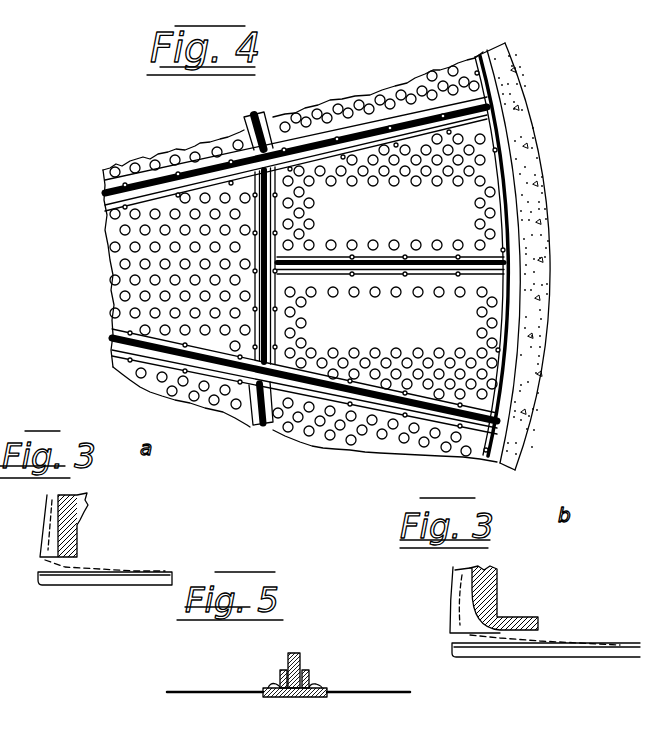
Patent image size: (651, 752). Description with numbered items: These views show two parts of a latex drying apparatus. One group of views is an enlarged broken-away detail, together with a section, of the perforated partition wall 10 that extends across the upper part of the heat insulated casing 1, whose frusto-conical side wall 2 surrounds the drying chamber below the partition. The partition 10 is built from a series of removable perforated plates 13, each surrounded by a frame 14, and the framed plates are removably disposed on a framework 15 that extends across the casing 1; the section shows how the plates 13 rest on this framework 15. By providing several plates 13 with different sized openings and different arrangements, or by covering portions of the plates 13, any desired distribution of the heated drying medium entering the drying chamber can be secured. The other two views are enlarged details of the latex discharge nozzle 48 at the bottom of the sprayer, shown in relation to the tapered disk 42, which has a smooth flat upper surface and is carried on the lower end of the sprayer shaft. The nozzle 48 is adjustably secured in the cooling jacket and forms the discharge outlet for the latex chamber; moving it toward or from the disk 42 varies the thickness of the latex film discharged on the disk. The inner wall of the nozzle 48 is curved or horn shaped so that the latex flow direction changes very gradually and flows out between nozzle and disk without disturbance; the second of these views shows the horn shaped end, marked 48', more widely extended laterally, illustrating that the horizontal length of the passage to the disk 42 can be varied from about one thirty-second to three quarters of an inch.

In FIG. 4, the heat insulated casing 1 is at (552, 333).
In FIG. 4, the frusto-conical side wall 2 is at (542, 374).
In FIG. 4, the perforated partition wall 10 is at (500, 213).
In FIG. 4, the perforated plates 13 is at (90, 205).
In FIG. 5, the perforated plates 13 is at (237, 679).
In FIG. 4, the frames 14 is at (247, 113).
In FIG. 5, the frames 14 is at (266, 684).
In FIG. 4, the framework 15 is at (307, 381).
In FIG. 5, the framework 15 is at (299, 657).
In FIG. 3A, the tapered disk 42 is at (110, 575).
In FIG. 3B, the tapered disk 42 is at (547, 647).
In FIG. 3A, the nozzle 48 is at (102, 532).
In FIG. 3B, the sealing block 48' is at (535, 605).